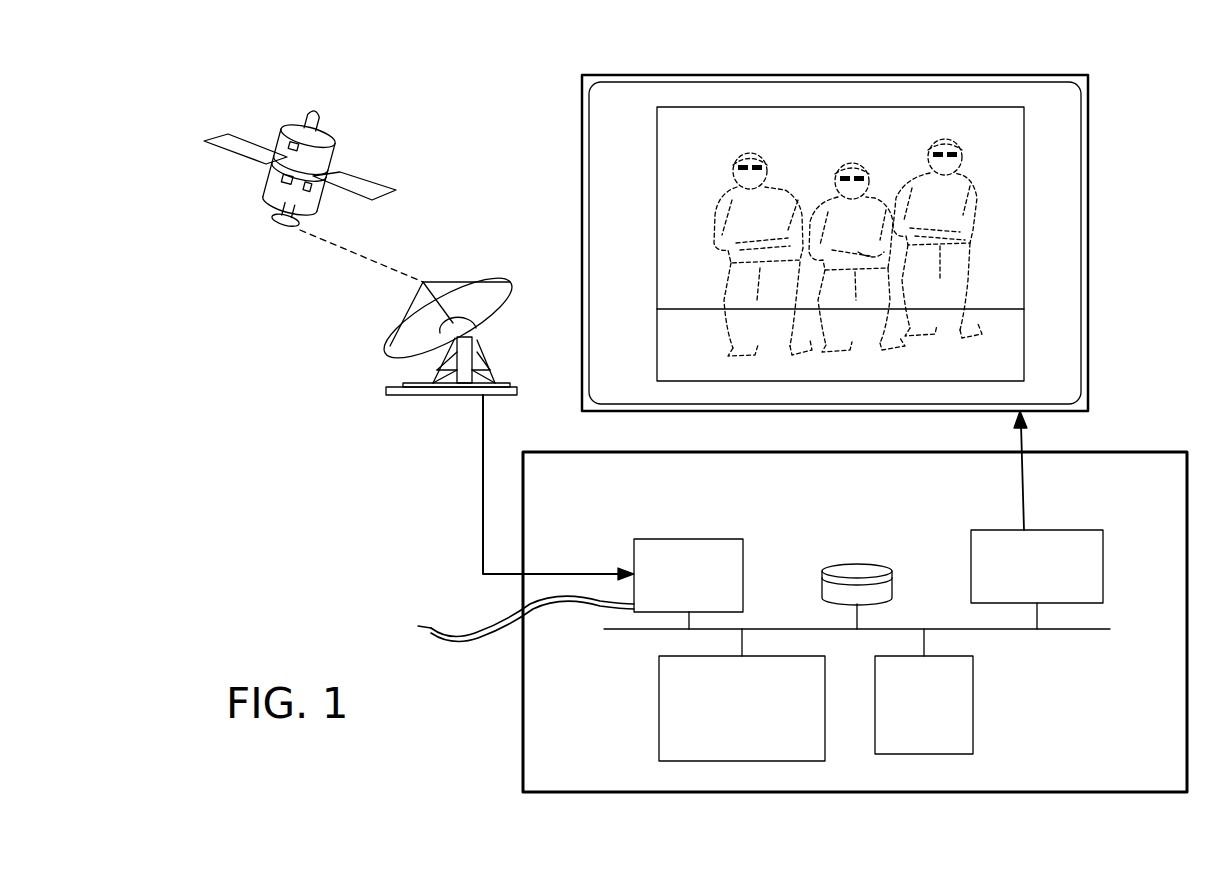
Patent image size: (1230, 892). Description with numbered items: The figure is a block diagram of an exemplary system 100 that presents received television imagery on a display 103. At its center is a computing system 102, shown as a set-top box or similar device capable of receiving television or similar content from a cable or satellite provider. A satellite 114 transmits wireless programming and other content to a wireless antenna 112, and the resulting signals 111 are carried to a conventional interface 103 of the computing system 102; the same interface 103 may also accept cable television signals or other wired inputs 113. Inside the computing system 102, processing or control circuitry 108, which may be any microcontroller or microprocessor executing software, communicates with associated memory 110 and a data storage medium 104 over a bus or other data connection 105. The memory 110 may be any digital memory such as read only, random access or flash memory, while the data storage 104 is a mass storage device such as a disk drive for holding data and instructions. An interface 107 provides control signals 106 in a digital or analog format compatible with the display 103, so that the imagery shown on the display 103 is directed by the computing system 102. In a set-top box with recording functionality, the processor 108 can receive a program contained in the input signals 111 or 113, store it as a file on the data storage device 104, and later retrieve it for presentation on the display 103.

The system 100 is at (1140, 162).
The computing system 102 is at (1147, 501).
The display / interface 103 is at (1073, 331).
The data storage 104 is at (870, 567).
The bus 105 is at (1049, 632).
The output signal 106 is at (1025, 516).
The interface 107 is at (1093, 585).
The processing or control circuitry 108 is at (814, 752).
The memory 110 is at (968, 709).
The signals 111 is at (482, 440).
The wireless antenna 112 is at (487, 332).
The wired inputs 113 is at (484, 627).
The satellite 114 is at (337, 153).